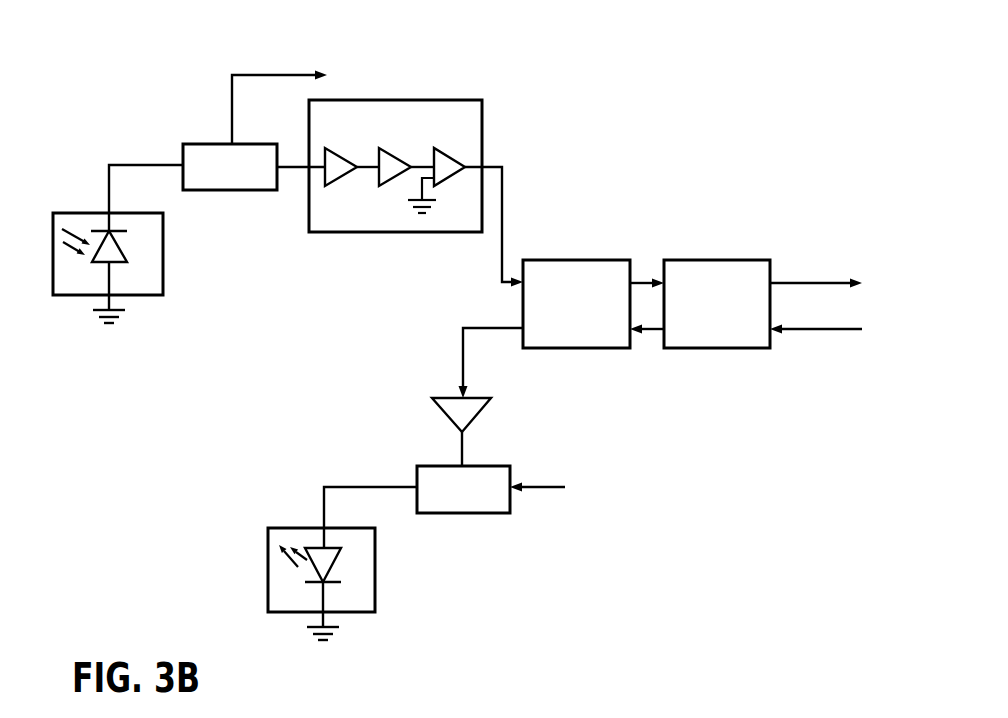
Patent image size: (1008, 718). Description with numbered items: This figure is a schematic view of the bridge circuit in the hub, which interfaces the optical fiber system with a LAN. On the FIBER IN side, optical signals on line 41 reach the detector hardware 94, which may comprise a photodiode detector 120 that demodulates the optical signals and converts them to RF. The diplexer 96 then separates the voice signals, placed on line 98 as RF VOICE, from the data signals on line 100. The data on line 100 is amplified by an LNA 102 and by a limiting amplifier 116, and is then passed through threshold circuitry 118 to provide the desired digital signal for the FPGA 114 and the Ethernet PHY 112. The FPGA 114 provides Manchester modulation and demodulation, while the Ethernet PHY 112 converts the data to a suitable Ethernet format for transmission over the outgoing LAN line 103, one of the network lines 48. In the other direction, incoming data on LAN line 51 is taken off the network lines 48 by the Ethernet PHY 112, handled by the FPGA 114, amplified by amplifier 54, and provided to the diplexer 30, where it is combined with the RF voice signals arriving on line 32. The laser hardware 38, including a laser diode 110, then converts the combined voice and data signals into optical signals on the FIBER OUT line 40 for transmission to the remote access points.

The diplexer 30 is at (478, 514).
The line carrying voice signals 32 is at (563, 488).
The laser hardware 38 is at (287, 613).
The optical fiber 40 is at (277, 534).
The FIBER IN line 41 is at (59, 223).
The network lines 48 is at (824, 303).
The LAN line 51 is at (826, 331).
The amplifier 54 is at (443, 414).
The detector hardware 94 is at (163, 257).
The diplexer 96 is at (238, 191).
The line carrying voice signals 98 is at (259, 75).
The line carrying data signals 100 is at (290, 168).
The LNA 102 is at (338, 187).
The outgoing LAN line 103 is at (838, 282).
The laser diode 110 is at (333, 565).
The Ethernet PHY 112 is at (719, 349).
The FPGA 114 is at (580, 349).
The limiting amplifier 116 is at (397, 150).
The threshold circuitry 118 is at (457, 150).
The photodiode detector 120 is at (96, 262).